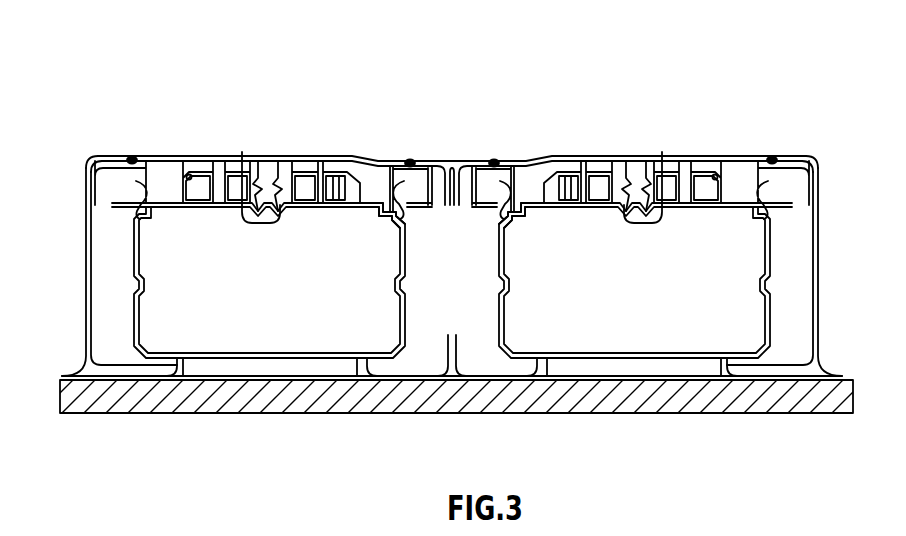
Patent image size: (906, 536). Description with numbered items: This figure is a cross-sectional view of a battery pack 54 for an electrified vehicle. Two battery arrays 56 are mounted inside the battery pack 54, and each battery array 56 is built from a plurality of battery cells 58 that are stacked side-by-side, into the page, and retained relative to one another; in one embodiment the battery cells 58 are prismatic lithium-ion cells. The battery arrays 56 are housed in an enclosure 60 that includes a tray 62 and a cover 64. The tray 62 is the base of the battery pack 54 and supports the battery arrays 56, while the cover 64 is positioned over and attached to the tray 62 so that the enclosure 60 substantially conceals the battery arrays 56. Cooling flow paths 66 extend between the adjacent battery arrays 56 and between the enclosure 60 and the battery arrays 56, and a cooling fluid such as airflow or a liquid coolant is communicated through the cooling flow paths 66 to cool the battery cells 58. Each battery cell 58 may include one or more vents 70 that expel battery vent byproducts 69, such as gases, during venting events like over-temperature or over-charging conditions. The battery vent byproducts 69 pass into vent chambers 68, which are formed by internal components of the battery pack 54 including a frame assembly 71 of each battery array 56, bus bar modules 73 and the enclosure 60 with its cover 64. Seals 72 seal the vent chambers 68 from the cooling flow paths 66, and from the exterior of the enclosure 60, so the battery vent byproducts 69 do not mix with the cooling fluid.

The battery pack 54 is at (614, 90).
The battery array 56 is at (116, 257).
The battery cell 58 is at (284, 279).
The enclosure 60 is at (110, 147).
The tray 62 is at (434, 403).
The cover 64 is at (457, 160).
The cooling flow path 66 is at (124, 301).
The vent chamber 68 is at (168, 157).
The battery vent byproduct 69 is at (278, 161).
The vent 70 is at (242, 152).
The frame assembly 71 is at (116, 190).
The seal 72 is at (132, 156).
The bus bar module 73 is at (195, 157).